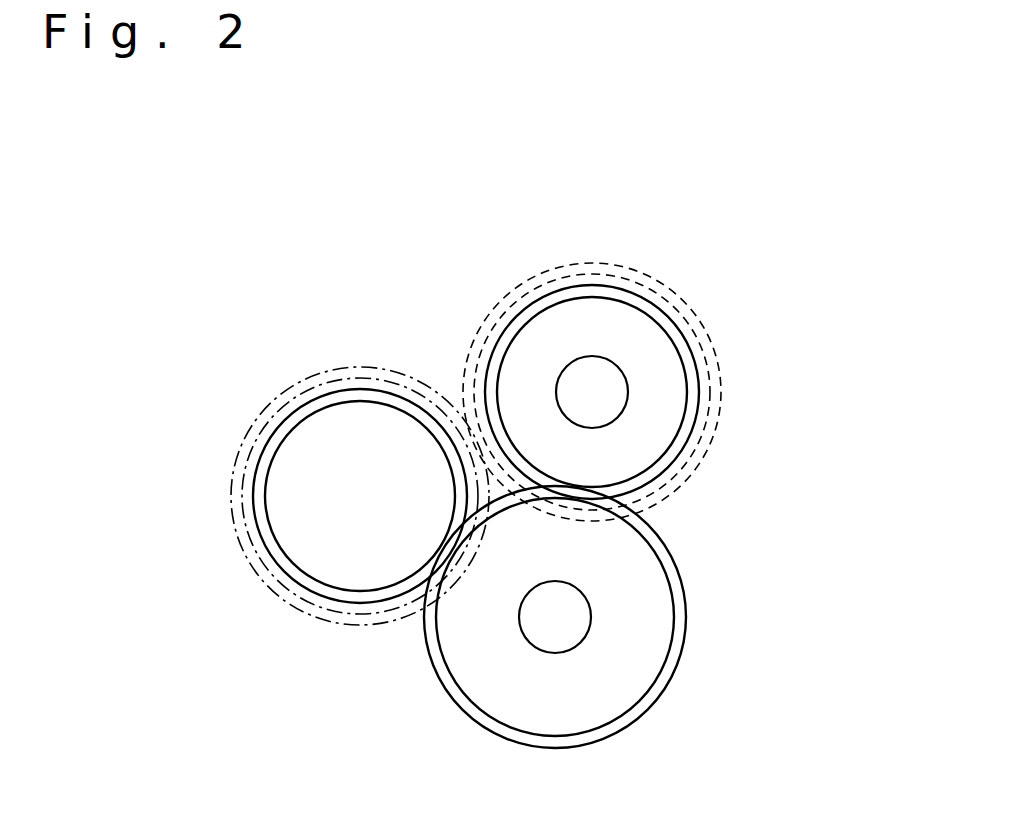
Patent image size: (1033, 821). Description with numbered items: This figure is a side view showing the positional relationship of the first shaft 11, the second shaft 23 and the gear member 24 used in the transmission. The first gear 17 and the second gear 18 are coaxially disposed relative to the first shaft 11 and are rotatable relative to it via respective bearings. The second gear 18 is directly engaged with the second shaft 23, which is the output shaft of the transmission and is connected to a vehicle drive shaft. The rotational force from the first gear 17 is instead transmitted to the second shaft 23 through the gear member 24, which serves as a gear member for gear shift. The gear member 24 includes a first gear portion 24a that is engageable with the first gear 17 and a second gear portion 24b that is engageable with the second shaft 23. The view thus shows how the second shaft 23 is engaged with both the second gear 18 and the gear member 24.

The first shaft 11 is at (478, 357).
The first gear 17 is at (682, 392).
The second gear 18 is at (675, 374).
The second shaft 23 is at (652, 617).
The gear member 24 is at (298, 496).
The first gear portion 24a is at (306, 473).
The second gear portion 24b is at (264, 496).